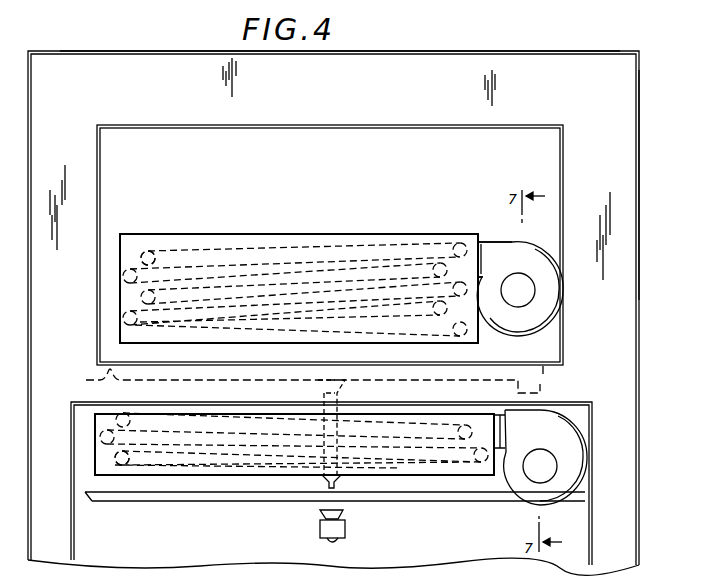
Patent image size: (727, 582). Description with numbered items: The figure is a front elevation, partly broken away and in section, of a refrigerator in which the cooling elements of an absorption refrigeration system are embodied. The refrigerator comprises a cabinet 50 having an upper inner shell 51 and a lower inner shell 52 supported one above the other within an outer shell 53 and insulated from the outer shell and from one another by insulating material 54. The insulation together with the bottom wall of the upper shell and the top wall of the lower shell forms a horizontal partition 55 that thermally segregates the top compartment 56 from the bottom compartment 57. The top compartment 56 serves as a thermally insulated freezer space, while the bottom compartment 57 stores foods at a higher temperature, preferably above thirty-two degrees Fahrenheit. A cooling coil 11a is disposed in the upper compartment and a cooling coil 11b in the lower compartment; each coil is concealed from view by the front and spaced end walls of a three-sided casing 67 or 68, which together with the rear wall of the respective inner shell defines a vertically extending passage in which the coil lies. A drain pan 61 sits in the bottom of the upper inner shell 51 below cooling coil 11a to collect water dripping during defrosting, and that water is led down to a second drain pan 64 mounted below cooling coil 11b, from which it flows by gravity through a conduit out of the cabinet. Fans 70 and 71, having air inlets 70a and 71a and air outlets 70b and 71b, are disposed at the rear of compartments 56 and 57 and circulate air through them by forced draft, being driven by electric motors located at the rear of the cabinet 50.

The cabinet 50 is at (203, 32).
The insulating material 54 is at (429, 63).
The outer shell 53 is at (641, 143).
The inner shell 51 is at (101, 167).
The top compartment 56 is at (366, 189).
The cooling coil 11a is at (162, 250).
The three-sided casing 67 is at (226, 234).
The horizontal partition 55 is at (254, 368).
The fan 70 is at (526, 254).
The air inlet 70a is at (523, 294).
The air outlet 70b is at (503, 228).
The drain pan 61 is at (300, 379).
The inner shell 52 is at (75, 551).
The bottom compartment 57 is at (278, 549).
The three-sided casing 68 is at (419, 478).
The cooling coil 11b is at (150, 470).
The second drain pan 64 is at (157, 508).
The fan 71 is at (558, 425).
The air inlet 71a is at (546, 468).
The air outlet 71b is at (511, 410).